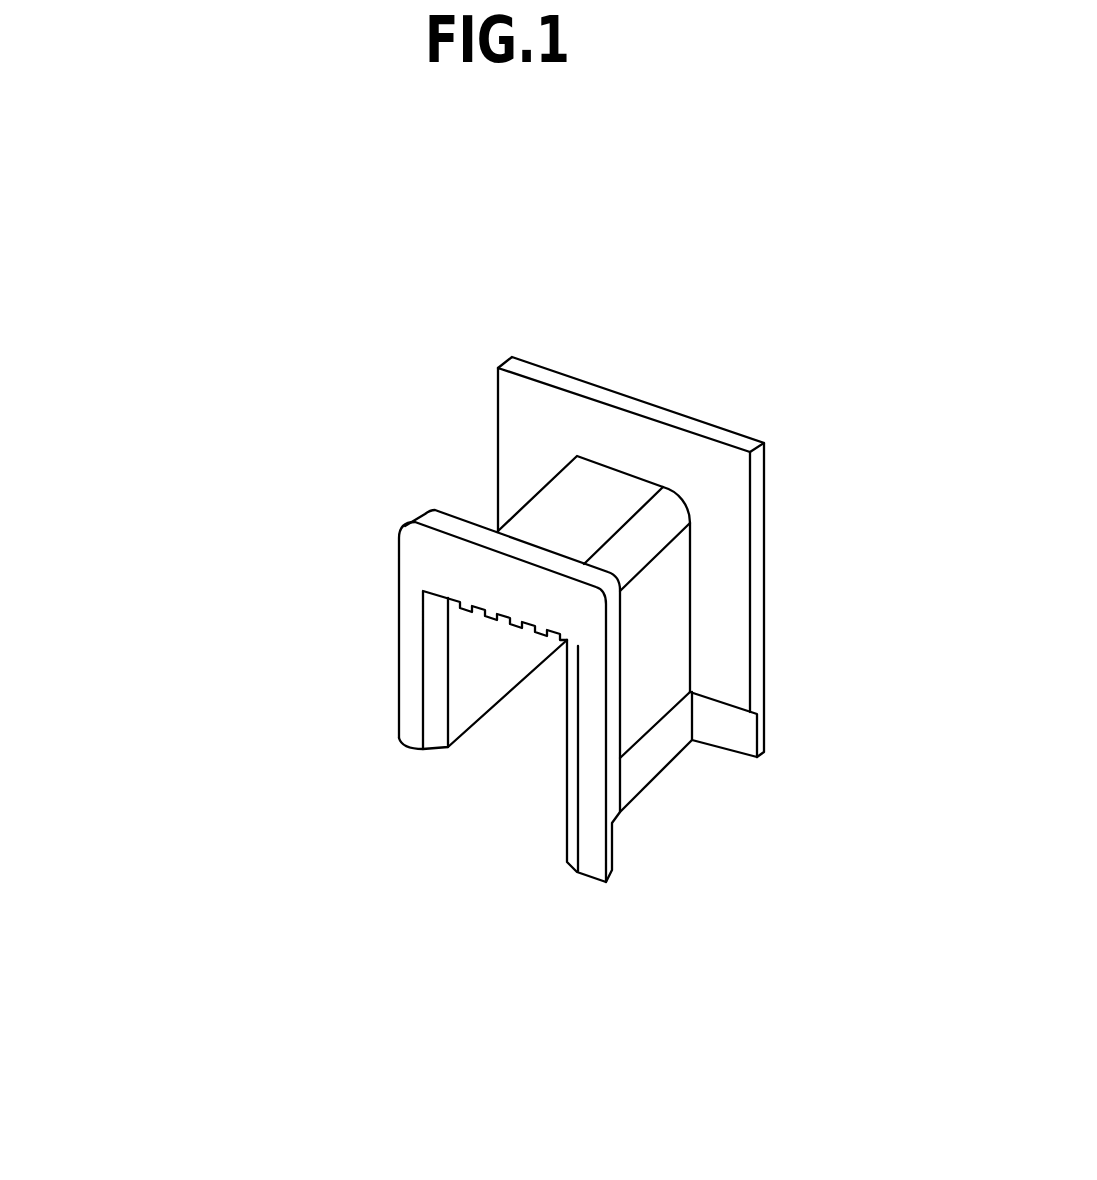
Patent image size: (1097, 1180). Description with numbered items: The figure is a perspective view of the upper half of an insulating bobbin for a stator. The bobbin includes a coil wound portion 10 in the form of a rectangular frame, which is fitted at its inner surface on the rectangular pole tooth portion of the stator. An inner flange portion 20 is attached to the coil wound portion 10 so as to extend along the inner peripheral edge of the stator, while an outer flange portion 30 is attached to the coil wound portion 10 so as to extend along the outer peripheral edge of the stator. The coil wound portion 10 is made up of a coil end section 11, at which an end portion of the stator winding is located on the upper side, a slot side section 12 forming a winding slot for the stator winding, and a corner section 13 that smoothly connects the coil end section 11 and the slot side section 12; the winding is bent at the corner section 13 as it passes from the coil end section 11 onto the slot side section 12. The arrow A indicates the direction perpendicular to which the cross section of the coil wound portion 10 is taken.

The coil wound portion 10 is at (492, 535).
The coil end section 11 is at (575, 522).
The slot side section 12 is at (647, 630).
The corner section 13 is at (638, 543).
The inner flange portion 20 is at (390, 592).
The outer flange portion 30 is at (773, 530).
The arrow A is at (463, 862).